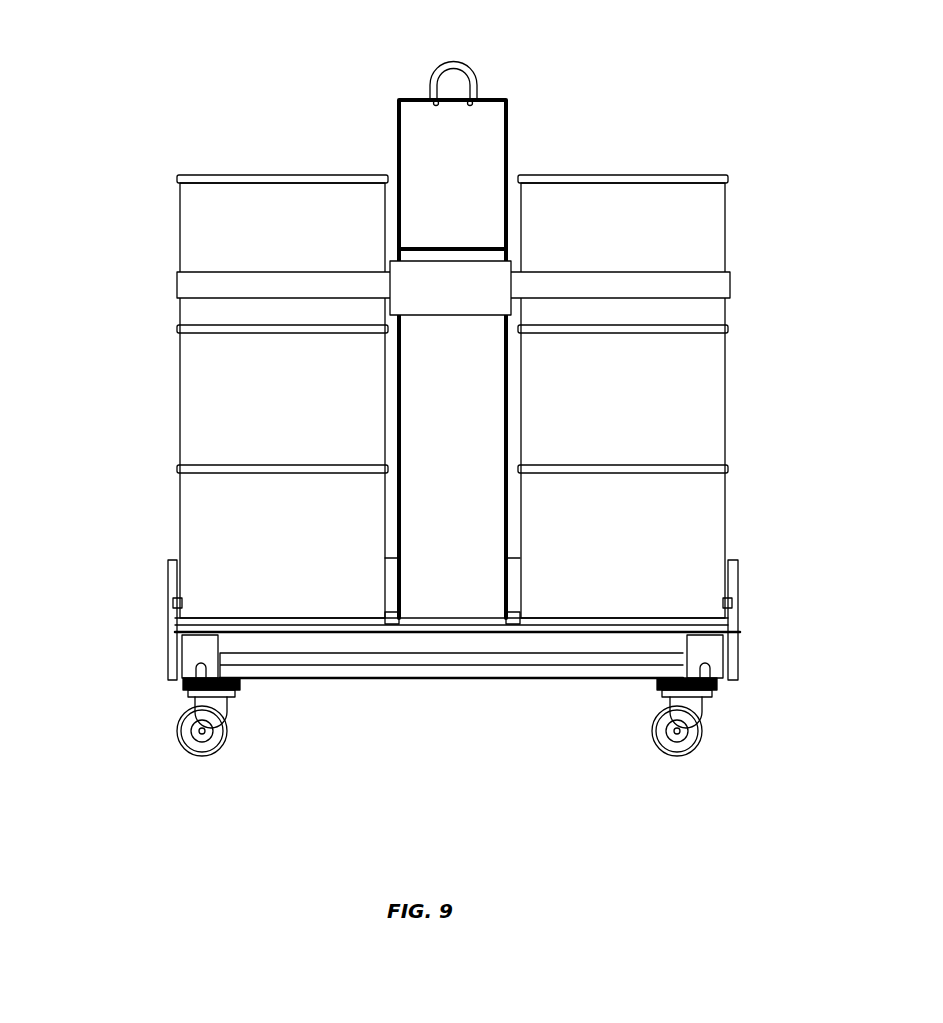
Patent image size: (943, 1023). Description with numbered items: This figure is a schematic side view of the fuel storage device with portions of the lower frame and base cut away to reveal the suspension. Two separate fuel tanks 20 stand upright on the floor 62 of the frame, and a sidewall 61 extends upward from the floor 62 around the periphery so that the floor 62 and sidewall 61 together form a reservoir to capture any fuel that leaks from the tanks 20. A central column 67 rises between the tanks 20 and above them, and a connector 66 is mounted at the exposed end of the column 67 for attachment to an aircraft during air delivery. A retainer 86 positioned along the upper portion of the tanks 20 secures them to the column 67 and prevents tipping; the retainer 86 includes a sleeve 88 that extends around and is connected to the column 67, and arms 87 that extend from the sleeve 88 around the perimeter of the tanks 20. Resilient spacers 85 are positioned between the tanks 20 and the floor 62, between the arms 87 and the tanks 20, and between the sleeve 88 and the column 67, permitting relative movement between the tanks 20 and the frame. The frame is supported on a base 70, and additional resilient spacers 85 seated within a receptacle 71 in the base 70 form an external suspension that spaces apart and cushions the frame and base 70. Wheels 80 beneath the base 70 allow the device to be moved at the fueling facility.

The fuel tank 20 is at (212, 391).
The sidewall 61 is at (170, 607).
The floor 62 is at (688, 622).
The connector 66 is at (465, 66).
The column 67 is at (510, 122).
The base 70 is at (295, 683).
The receptacle 71 is at (168, 672).
The wheel 80 is at (180, 745).
The resilient spacer 85 is at (443, 255).
The retainer 86 is at (420, 280).
The arm 87 is at (220, 287).
The sleeve 88 is at (477, 280).